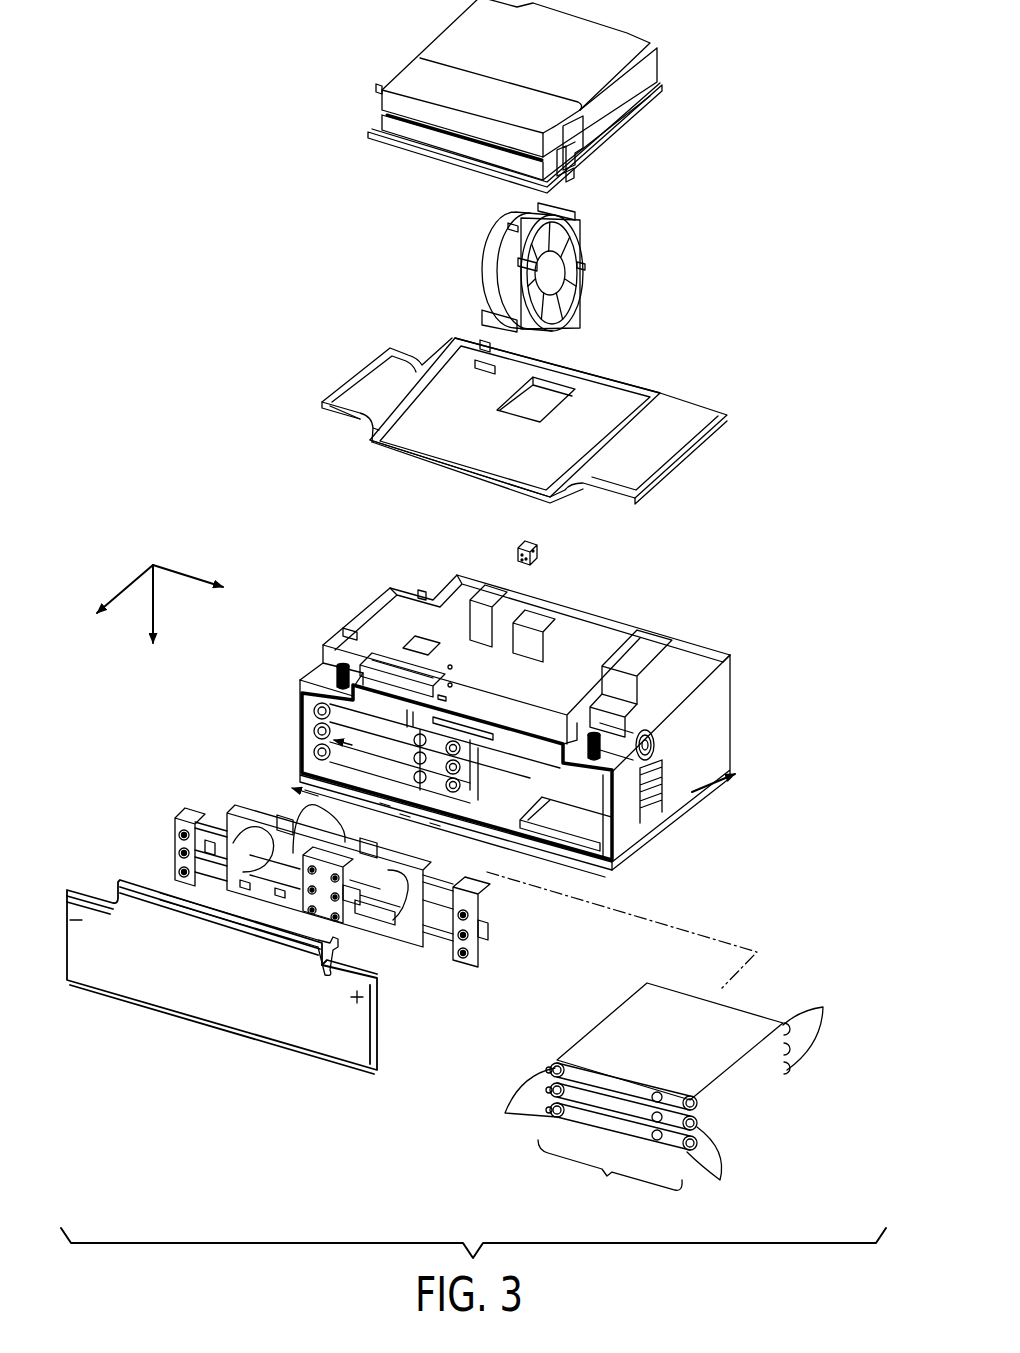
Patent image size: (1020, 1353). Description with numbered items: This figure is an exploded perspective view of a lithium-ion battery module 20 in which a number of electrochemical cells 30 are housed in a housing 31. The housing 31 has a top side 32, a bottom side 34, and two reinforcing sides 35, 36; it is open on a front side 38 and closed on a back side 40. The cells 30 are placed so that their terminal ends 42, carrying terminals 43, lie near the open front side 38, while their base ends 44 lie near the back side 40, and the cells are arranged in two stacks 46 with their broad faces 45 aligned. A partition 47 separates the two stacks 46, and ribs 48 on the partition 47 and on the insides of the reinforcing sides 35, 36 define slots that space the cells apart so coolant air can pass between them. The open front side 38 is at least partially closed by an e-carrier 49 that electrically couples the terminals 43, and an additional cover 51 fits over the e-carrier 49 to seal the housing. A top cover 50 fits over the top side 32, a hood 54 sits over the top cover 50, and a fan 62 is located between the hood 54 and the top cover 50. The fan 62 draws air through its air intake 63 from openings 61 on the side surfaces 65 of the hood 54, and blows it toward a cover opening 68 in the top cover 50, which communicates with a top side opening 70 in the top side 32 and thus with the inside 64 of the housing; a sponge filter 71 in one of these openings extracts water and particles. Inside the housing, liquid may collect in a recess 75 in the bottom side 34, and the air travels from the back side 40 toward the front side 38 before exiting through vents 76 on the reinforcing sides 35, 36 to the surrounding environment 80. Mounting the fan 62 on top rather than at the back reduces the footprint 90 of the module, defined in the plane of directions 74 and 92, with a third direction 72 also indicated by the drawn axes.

The battery module 20 is at (198, 130).
The electrochemical cells 30 is at (747, 1100).
The housing 31 is at (347, 582).
The top side 32 is at (567, 720).
The bottom side 34 is at (558, 852).
The reinforcing side 35 is at (690, 788).
The reinforcing side 36 is at (300, 699).
The front side 38 is at (320, 745).
The back side 40 is at (735, 712).
The terminal ends 42 is at (607, 1115).
The terminals 43 is at (614, 1136).
The base ends 44 is at (812, 1024).
The broad faces 45 is at (633, 1016).
The stacks 46 is at (610, 1177).
The partition 47 is at (482, 808).
The ribs 48 is at (483, 740).
The e-carrier 49 is at (160, 845).
The top cover 50 is at (356, 372).
The cover 51 is at (222, 1042).
The hood 54 is at (402, 46).
The openings 61 is at (560, 140).
The fan 62 is at (496, 265).
The air intake 63 is at (495, 330).
The inside 64 is at (512, 792).
The side surfaces 65 is at (378, 82).
The cover opening 68 is at (538, 404).
The top side opening 70 is at (550, 680).
The sponge filter 71 is at (521, 537).
The vertical axis 72 is at (155, 600).
The direction 74 is at (183, 574).
The recess 75 is at (548, 838).
The vents 76 is at (660, 800).
The surrounding environment 80 is at (718, 869).
The footprint 90 is at (483, 900).
The direction 92 is at (133, 582).